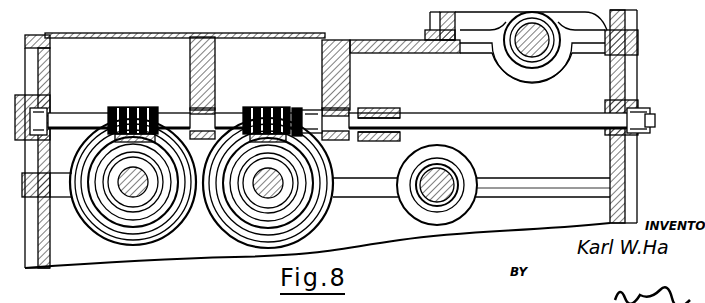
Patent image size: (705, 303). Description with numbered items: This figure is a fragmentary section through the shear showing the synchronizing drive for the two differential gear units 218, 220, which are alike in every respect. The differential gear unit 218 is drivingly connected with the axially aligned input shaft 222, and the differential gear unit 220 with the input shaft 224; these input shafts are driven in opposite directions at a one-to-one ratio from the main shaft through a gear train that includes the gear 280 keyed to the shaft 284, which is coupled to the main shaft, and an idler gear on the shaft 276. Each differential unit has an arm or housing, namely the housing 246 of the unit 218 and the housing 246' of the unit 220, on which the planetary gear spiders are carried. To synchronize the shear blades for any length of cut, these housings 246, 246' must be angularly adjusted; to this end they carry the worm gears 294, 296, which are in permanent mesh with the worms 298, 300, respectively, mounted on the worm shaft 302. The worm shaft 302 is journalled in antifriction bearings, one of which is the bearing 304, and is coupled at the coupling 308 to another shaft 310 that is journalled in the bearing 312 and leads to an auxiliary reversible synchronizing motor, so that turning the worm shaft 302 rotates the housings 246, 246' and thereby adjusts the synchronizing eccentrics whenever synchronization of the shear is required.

The gear 280 is at (361, 40).
The antifriction bearing 304 is at (53, 100).
The worm gear 296 is at (88, 120).
The worm 300 is at (137, 107).
The worm gear 294 is at (232, 122).
The worm 298 is at (272, 107).
The worm shaft 302 is at (306, 122).
The coupling 308 is at (388, 110).
The shaft 310 is at (485, 122).
The shaft 284 is at (537, 55).
The bearing 312 is at (634, 103).
The input shaft 224 is at (128, 190).
The differential gear unit 220 is at (135, 200).
The differential gear housing 246' is at (133, 203).
The input shaft 222 is at (264, 190).
The differential gear unit 218 is at (268, 202).
The differential gear housing 246 is at (281, 183).
The shaft 276 is at (425, 177).